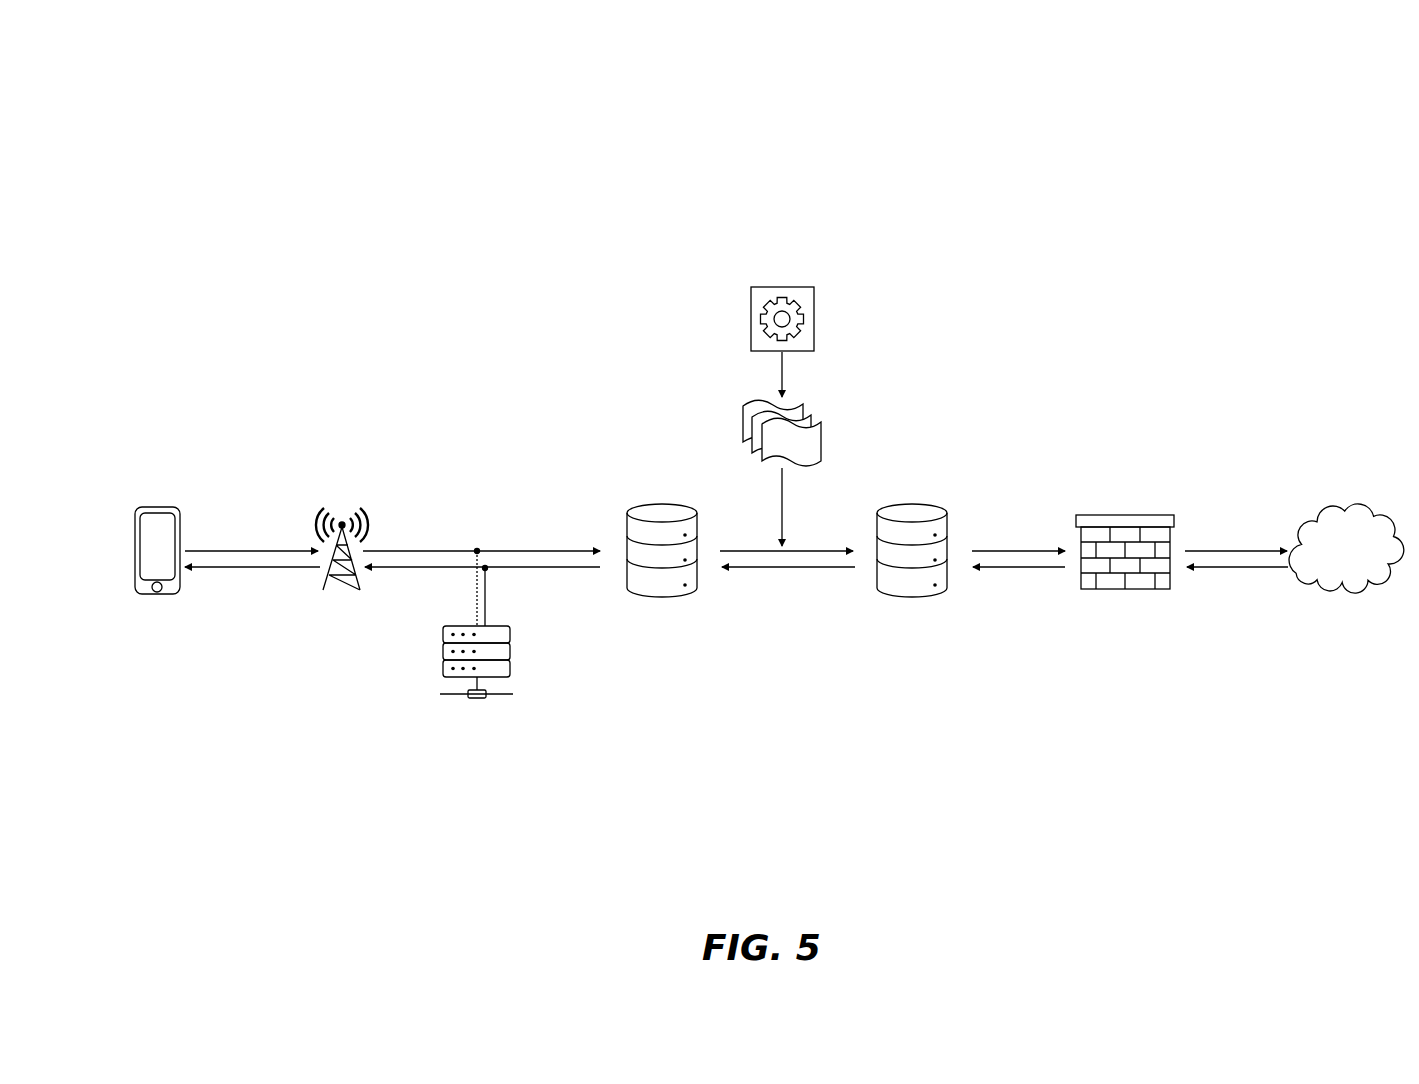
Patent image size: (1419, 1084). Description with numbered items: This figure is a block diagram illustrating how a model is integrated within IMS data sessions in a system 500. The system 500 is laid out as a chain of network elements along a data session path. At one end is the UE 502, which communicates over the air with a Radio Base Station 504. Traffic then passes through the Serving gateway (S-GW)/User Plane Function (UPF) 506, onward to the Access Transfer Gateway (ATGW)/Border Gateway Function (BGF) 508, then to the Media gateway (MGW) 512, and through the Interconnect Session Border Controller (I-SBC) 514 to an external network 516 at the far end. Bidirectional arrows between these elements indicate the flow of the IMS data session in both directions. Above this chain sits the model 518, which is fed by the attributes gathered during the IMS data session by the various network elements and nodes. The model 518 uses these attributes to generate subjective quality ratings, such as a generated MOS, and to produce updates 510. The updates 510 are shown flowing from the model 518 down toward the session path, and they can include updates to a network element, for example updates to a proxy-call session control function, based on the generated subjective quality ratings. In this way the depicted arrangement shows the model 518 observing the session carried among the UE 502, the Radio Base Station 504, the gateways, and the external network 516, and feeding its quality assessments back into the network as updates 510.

The system 500 is at (1303, 95).
The UE 502 is at (157, 598).
The Radio Base Station 504 is at (341, 510).
The Serving gateway (S-GW)/User Plane Function (UPF) 506 is at (477, 702).
The Access Transfer Gateway (ATGW)/Border Gateway Function (BGF) 508 is at (658, 601).
The updates 510 is at (742, 433).
The Media gateway (MGW) 512 is at (908, 601).
The Interconnect Session Border Controller (I-SBC) 514 is at (1128, 594).
The external network 516 is at (1350, 594).
The model 518 is at (749, 318).